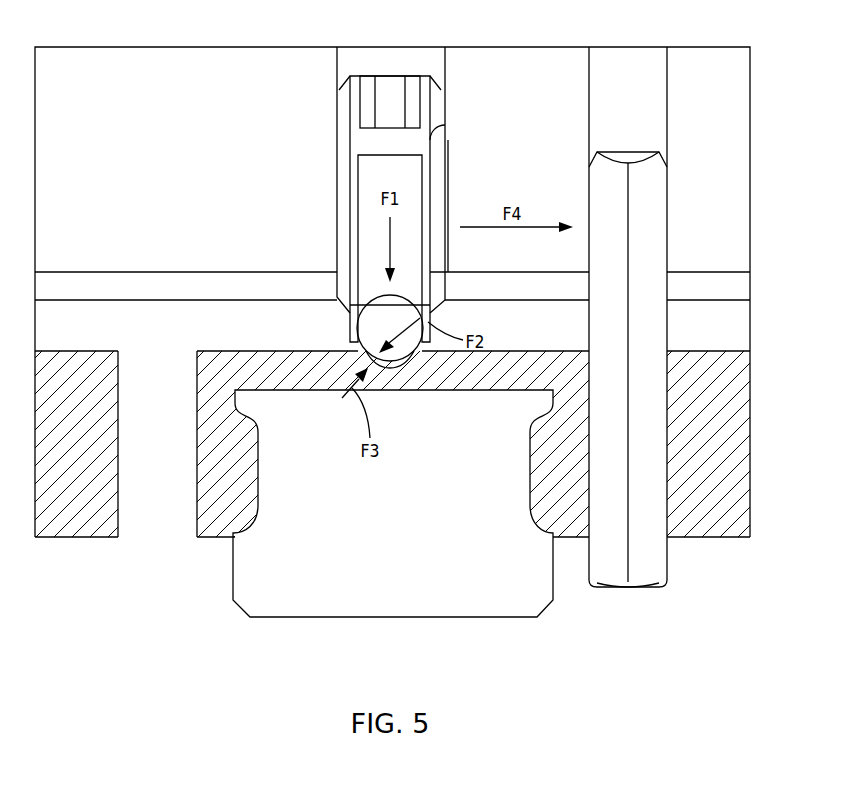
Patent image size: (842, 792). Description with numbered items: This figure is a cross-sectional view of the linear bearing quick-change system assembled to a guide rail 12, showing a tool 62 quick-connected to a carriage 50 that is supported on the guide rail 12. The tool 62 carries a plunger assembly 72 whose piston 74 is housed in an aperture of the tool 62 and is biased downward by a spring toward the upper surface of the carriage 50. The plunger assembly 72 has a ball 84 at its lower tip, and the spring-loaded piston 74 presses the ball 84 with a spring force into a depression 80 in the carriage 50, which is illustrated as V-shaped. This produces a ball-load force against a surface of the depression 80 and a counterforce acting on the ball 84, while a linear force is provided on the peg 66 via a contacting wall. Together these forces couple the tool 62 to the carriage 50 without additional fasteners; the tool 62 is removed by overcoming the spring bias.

The guide rail 12 is at (470, 600).
The carriage 50 is at (737, 438).
The tool 62 is at (113, 62).
The peg 66 is at (657, 253).
The plunger assembly 72 is at (303, 146).
The piston 74 is at (363, 142).
The depression 80 is at (400, 350).
The ball 84 is at (368, 330).